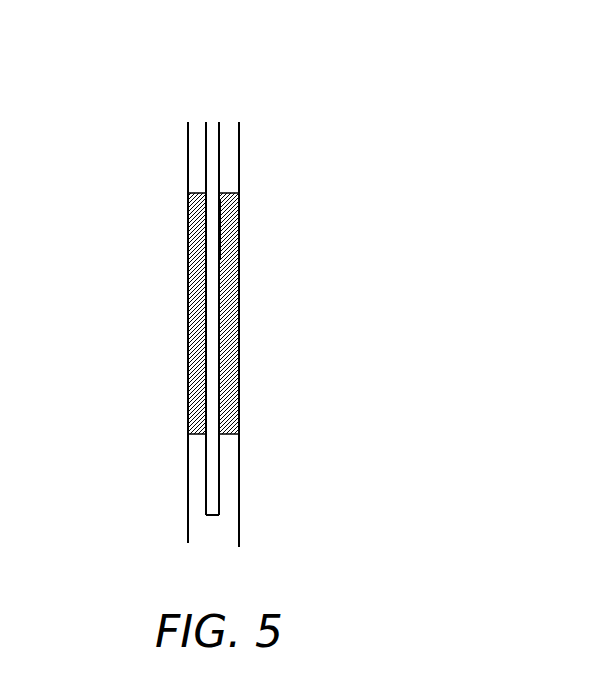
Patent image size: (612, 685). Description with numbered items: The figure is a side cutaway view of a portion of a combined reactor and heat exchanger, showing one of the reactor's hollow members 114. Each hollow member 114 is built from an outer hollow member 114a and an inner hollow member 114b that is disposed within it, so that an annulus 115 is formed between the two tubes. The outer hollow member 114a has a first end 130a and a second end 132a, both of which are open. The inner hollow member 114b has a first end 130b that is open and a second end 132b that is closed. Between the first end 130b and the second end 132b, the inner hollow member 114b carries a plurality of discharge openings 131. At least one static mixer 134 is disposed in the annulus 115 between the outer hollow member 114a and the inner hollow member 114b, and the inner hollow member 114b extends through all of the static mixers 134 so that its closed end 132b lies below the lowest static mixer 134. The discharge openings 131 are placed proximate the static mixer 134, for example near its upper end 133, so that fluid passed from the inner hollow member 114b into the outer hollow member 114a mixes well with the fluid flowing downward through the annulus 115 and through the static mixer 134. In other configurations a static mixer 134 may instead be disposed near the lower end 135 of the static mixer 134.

The hollow member 114 is at (240, 147).
The outer hollow member 114a is at (240, 197).
The inner hollow member 114b is at (220, 170).
The annulus 115 is at (188, 192).
The first end of outer hollow member 130a is at (198, 123).
The first end of inner hollow member 130b is at (215, 122).
The discharge openings 131 is at (200, 188).
The second end of outer hollow member 132a is at (239, 544).
The second end of inner hollow member 132b is at (215, 517).
The upper end of static mixer 133 is at (222, 200).
The static mixer 134 is at (233, 310).
The lower end of static mixer 135 is at (232, 432).